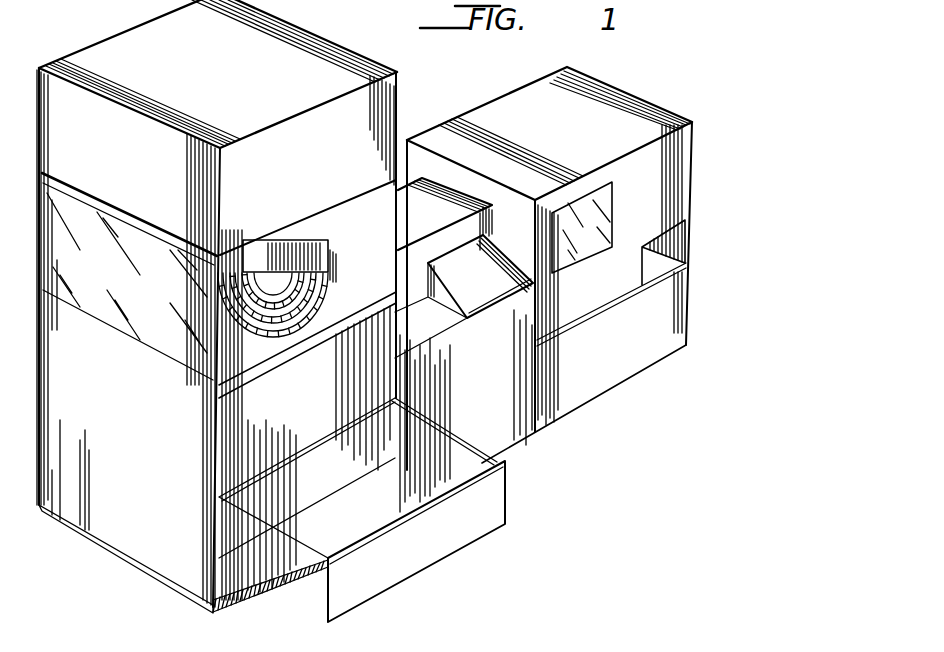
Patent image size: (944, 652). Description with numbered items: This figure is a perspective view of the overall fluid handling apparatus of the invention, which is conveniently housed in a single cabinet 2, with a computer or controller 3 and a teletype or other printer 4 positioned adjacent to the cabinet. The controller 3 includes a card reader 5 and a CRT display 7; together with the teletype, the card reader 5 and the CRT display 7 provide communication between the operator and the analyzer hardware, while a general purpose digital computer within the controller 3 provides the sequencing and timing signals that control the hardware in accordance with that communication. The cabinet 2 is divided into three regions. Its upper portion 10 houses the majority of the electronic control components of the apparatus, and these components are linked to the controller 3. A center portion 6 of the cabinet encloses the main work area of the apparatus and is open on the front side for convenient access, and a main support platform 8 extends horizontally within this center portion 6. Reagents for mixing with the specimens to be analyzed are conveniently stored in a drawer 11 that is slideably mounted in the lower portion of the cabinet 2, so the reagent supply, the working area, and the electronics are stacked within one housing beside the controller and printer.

The cabinet 2 is at (420, 74).
The upper portion 10 is at (48, 130).
The controller 3 is at (675, 302).
The printer 4 is at (497, 436).
The card reader 5 is at (675, 238).
The center portion 6 is at (388, 215).
The CRT display 7 is at (597, 212).
The main support platform 8 is at (247, 355).
The drawer 11 is at (505, 503).